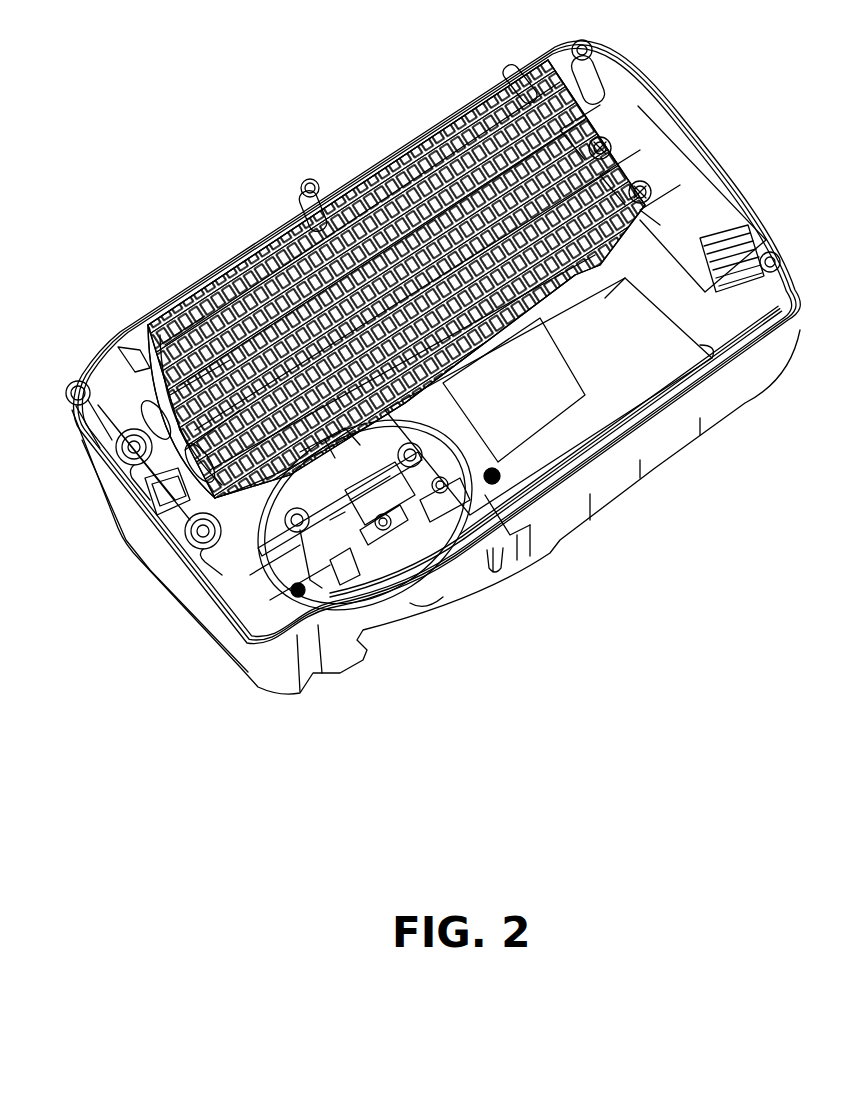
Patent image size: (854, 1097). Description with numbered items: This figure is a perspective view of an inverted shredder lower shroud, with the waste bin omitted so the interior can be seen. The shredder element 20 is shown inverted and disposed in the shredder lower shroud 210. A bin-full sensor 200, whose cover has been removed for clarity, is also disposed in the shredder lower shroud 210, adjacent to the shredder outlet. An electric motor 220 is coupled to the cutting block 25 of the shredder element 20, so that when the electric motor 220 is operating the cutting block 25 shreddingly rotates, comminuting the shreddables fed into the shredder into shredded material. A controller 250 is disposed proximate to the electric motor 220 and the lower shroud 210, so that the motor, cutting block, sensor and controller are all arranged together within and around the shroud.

The shredder element 20 is at (122, 393).
The cutting block 25 is at (172, 300).
The bin-full sensor 200 is at (273, 258).
The shredder lower shroud 210 is at (449, 112).
The electric motor 220 is at (625, 400).
The controller 250 is at (573, 398).